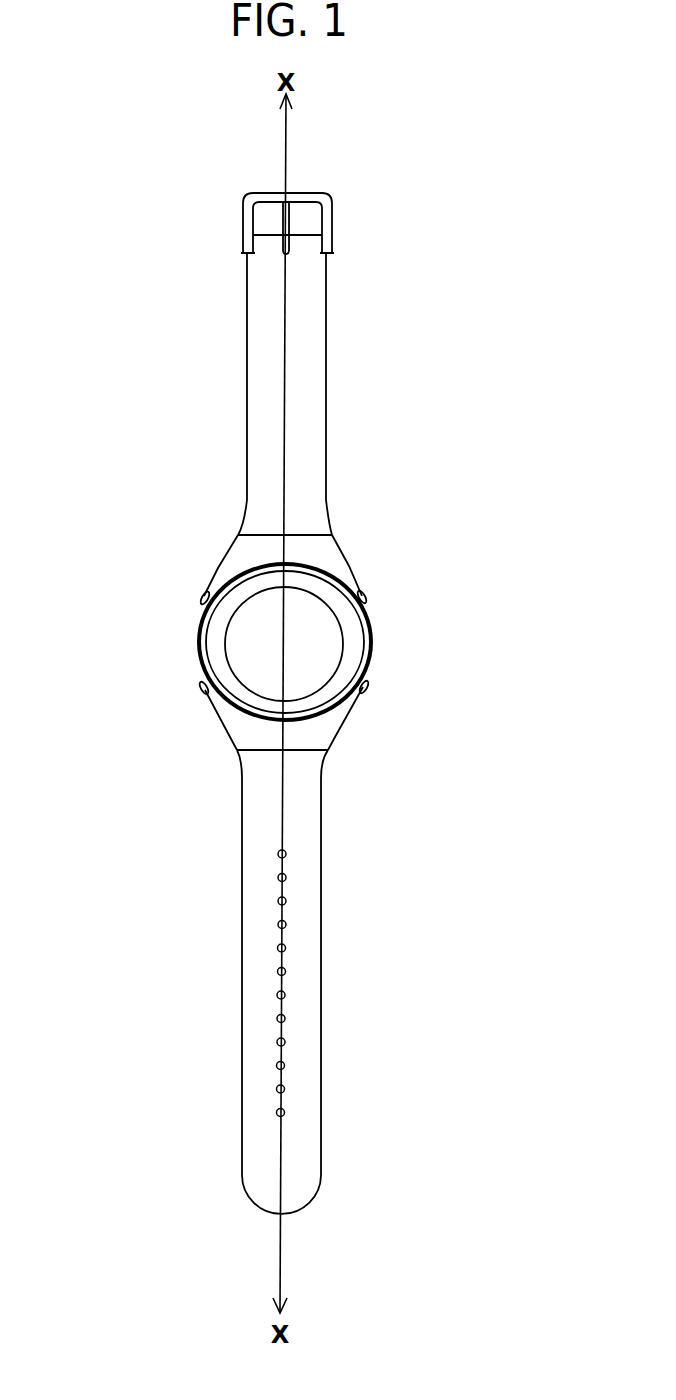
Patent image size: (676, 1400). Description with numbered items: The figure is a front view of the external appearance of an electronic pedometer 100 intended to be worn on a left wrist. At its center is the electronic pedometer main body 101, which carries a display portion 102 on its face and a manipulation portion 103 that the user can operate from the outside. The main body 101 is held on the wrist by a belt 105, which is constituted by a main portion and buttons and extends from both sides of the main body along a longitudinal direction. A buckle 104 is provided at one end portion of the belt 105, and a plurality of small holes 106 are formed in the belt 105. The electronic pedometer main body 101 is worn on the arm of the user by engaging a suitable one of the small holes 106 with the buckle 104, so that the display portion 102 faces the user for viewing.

The electronic pedometer 100 is at (200, 550).
The electronic pedometer main body 101 is at (348, 565).
The display portion 102 is at (332, 652).
The manipulation portion 103 is at (205, 598).
The buckle 104 is at (328, 193).
The belt 105 is at (312, 495).
The small holes 106 is at (283, 975).